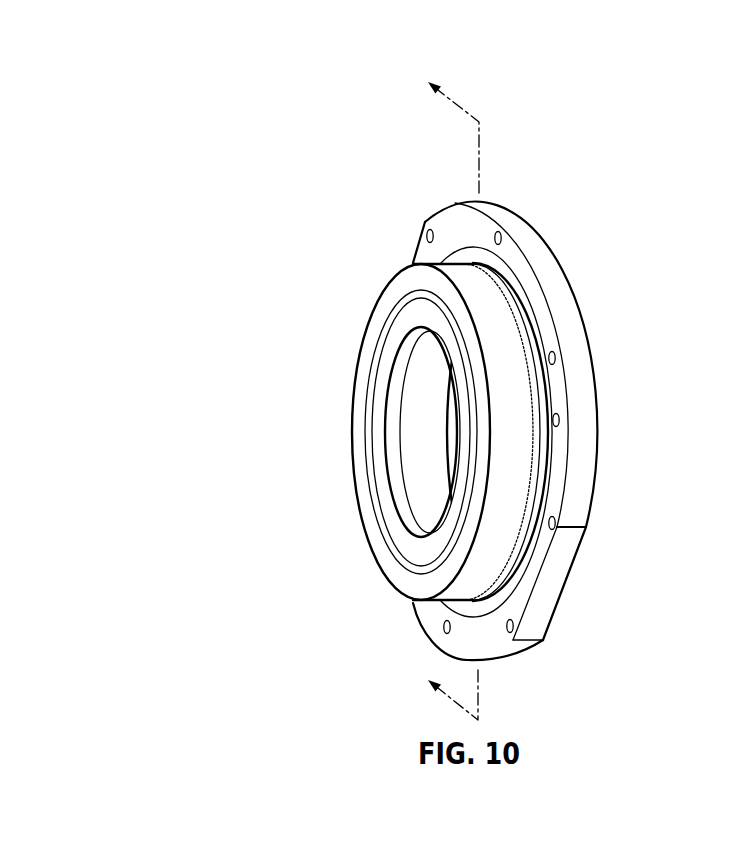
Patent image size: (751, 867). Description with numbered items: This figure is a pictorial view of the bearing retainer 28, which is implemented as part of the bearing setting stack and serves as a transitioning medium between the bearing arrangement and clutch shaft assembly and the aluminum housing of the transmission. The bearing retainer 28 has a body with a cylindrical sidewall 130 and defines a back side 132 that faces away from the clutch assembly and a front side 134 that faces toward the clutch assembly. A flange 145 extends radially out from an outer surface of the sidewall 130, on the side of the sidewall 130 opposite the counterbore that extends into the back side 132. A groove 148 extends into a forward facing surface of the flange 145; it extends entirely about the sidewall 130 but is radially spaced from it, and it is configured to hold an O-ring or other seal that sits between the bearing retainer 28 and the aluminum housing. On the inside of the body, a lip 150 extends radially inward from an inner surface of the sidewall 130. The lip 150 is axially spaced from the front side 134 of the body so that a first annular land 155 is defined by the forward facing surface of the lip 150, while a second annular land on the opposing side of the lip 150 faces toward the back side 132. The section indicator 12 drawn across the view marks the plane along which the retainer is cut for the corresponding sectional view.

The bearing retainer 28 is at (459, 421).
The cylindrical sidewall 130 is at (518, 395).
The back side 132 is at (588, 568).
The front side 134 is at (350, 517).
The flange 145 is at (518, 230).
The groove 148 is at (425, 233).
The lip 150 is at (385, 397).
The first annular land 155 is at (382, 470).
The section line of FIG. 12 is at (437, 389).